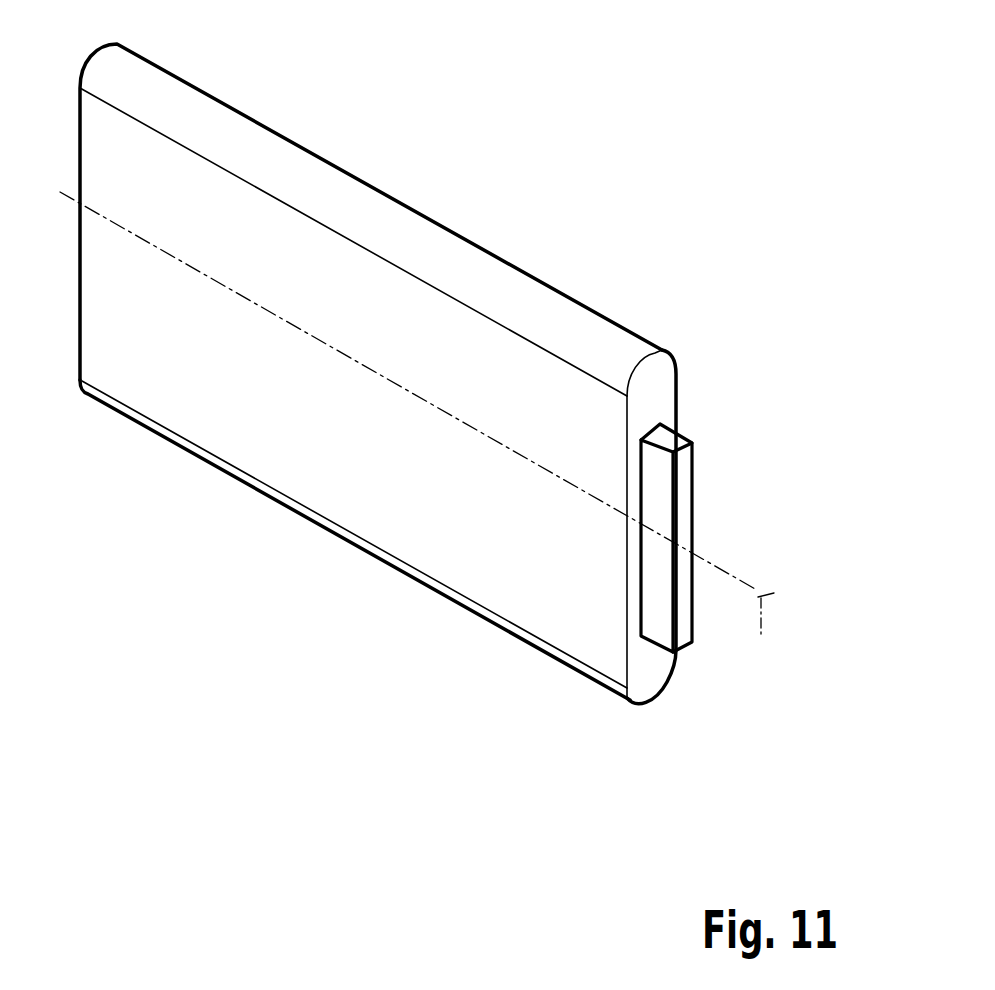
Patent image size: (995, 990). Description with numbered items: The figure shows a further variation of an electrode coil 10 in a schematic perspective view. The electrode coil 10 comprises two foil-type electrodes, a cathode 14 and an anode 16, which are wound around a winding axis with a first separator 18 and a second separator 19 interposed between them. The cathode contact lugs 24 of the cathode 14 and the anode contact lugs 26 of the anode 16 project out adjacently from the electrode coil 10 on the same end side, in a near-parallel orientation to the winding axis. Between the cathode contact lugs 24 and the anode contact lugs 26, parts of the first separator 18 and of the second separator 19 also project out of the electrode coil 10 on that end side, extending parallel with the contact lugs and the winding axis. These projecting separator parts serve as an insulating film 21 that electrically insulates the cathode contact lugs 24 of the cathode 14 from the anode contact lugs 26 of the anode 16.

The electrode coil 10 is at (589, 103).
The cathode 14 is at (691, 538).
The cathode contact lugs 24 is at (691, 538).
The anode 16 is at (691, 538).
The anode contact lugs 26 is at (691, 538).
The first separator 18 is at (691, 538).
The second separator 19 is at (691, 538).
The insulating film 21 is at (653, 562).